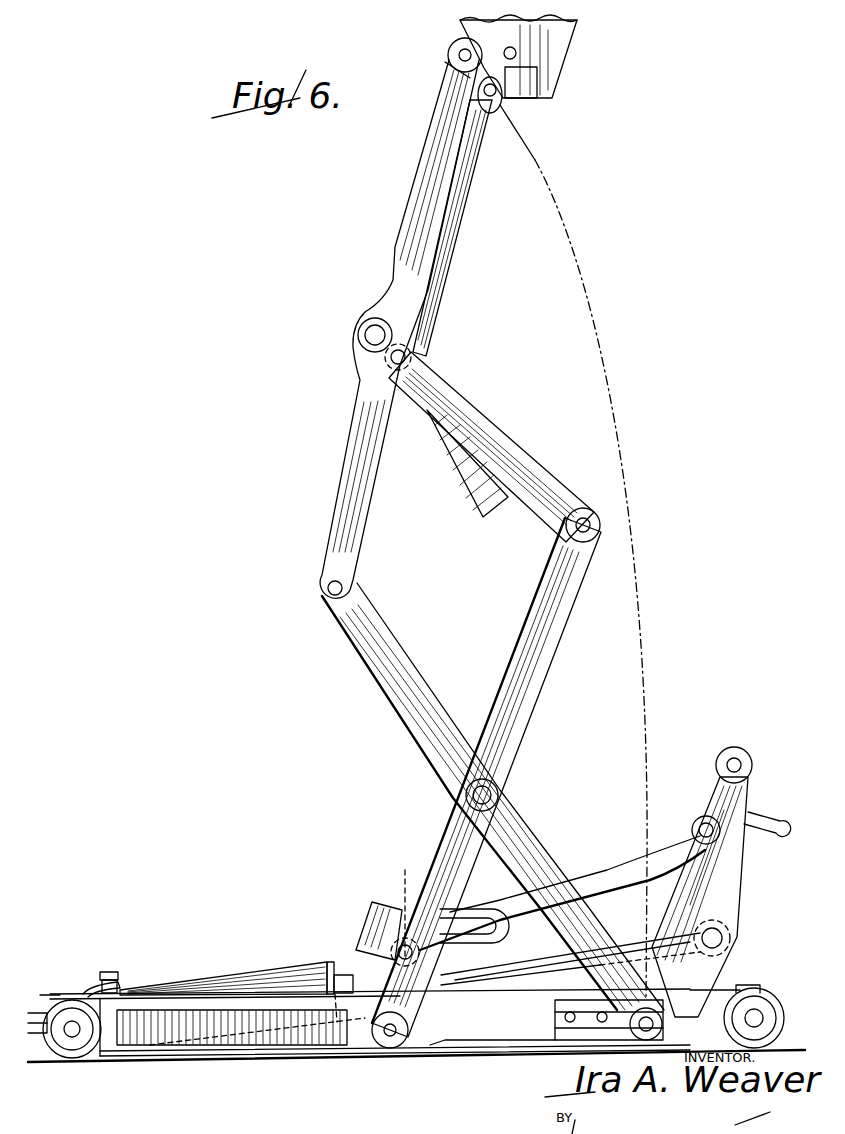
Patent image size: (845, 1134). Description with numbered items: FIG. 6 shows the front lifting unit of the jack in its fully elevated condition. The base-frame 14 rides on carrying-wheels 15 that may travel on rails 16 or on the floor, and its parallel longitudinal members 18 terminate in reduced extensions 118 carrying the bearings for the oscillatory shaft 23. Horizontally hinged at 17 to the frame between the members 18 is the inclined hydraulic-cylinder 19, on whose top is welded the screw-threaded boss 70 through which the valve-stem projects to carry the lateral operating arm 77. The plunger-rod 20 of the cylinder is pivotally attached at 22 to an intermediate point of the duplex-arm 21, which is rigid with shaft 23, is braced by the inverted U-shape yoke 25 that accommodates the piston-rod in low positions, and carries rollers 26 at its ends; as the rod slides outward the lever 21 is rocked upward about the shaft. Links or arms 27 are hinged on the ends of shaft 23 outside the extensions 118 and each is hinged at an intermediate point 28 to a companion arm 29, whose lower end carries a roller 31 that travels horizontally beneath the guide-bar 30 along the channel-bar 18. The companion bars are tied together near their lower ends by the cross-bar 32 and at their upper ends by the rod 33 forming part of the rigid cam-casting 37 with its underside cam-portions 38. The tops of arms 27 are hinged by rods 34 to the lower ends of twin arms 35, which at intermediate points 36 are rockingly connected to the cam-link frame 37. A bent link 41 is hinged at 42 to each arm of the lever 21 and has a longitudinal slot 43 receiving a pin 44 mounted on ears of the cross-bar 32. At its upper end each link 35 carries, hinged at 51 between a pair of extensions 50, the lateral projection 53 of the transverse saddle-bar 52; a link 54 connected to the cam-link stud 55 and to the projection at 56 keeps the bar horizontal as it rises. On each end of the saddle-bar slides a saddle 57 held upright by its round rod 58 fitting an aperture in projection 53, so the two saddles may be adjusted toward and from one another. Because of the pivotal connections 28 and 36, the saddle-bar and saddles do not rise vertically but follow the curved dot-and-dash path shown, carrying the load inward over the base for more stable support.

The base-frame 14 is at (292, 1050).
The carrying-wheels 15 is at (773, 1003).
The rails 16 is at (83, 997).
The horizontal hinge 17 is at (100, 1037).
The longitudinal frame members 18 is at (492, 1040).
The hydraulic-cylinder 19 is at (250, 982).
The plunger-rod 20 is at (522, 968).
The duplex-arm 21 is at (718, 893).
The pivot 22 is at (725, 939).
The shaft 23 is at (690, 1002).
The inverted U-shape yoke 25 is at (775, 815).
The rollers 26 is at (724, 760).
The links or arms 27 is at (410, 678).
The intermediate pivot point 28 is at (468, 796).
The companion arm or link 29 is at (518, 719).
The guide-bar 30 is at (220, 1010).
The carrying roller 31 is at (391, 1048).
The yoke or cross-bar 32 is at (362, 931).
The shaft or rod 33 is at (601, 525).
The shafts or rods 34 is at (328, 590).
The twin arms or links 35 is at (420, 215).
The intermediate pivotal connections 36 is at (360, 336).
The cam-casting or cam-link frame 37 is at (520, 450).
The cam-portions 38 is at (486, 516).
The bent link 41 is at (600, 880).
The hinge 42 is at (698, 826).
The longitudinal slot 43 is at (474, 924).
The pin 44 is at (398, 880).
The extensions 50 is at (462, 80).
The hinge 51 is at (455, 60).
The saddle-bar 52 is at (535, 92).
The lateral projection 53 is at (505, 48).
The links 54 is at (458, 222).
The studs 55 is at (405, 357).
The pivotal connection 56 is at (495, 96).
The saddle 57 is at (562, 36).
The round rod 58 is at (518, 56).
The screw-threaded boss 70 is at (119, 986).
The operating arm 77 is at (96, 975).
The frame extensions 118 is at (675, 1024).